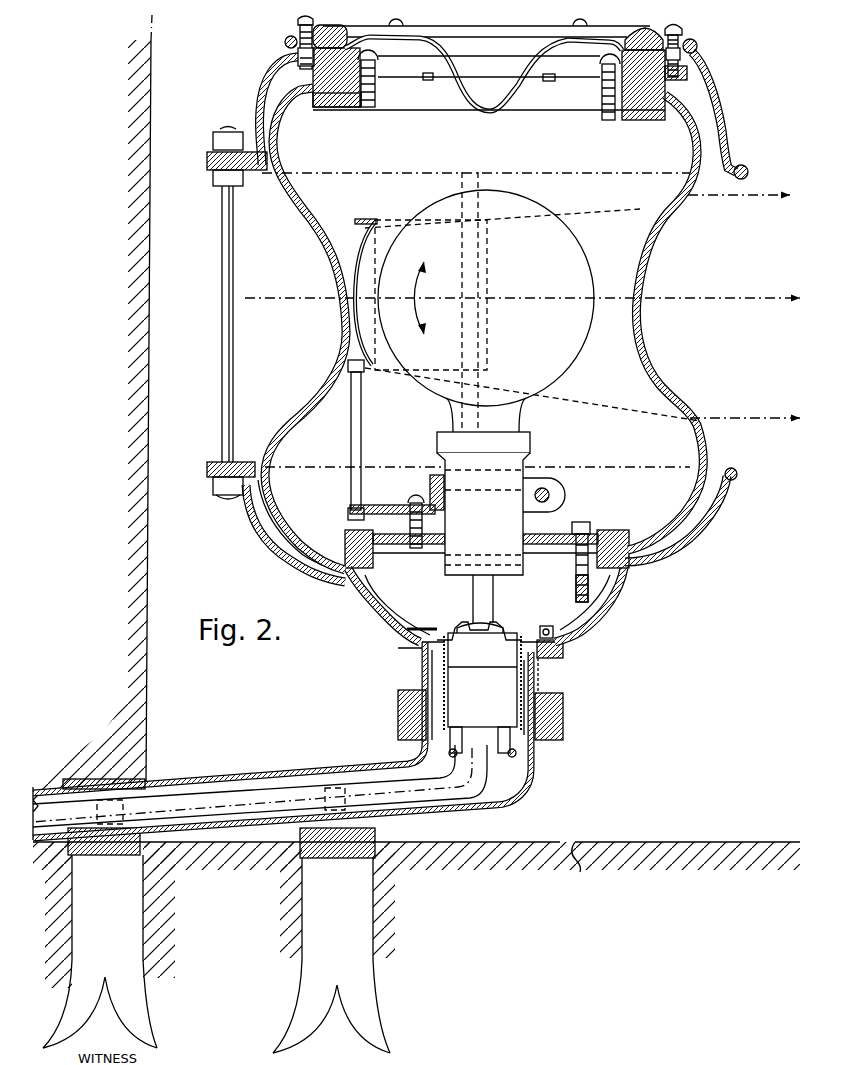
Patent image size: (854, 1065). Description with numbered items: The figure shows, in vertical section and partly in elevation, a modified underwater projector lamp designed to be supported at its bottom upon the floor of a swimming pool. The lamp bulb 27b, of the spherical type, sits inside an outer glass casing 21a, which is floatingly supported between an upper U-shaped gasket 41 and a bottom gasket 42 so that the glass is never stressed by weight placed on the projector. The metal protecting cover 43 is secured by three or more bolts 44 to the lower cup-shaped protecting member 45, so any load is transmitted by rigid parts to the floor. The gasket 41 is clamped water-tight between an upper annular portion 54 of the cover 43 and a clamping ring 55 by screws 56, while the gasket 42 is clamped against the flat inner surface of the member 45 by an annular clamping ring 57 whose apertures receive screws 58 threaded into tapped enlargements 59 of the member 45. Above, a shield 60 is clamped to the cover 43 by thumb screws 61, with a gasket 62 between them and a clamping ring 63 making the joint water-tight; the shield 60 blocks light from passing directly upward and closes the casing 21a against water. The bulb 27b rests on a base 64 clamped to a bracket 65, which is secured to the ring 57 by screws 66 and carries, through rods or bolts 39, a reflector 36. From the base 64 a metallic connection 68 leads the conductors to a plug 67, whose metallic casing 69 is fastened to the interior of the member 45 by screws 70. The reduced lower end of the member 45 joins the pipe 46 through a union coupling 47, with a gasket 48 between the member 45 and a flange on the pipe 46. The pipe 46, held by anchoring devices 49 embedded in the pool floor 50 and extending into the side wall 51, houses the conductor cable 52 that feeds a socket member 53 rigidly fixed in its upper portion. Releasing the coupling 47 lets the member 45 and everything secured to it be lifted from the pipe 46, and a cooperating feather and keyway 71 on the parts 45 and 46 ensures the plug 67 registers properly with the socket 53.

The outer glass casing 21a is at (648, 245).
The lamp bulb 27b is at (570, 220).
The reflector 36 is at (362, 250).
The rods or bolts 39 is at (350, 432).
The gasket 41 is at (315, 97).
The gasket 42 is at (620, 550).
The protecting cover 43 is at (716, 82).
The bolts 44 is at (232, 285).
The cup-shaped protecting member 45 is at (692, 548).
The pipe 46 is at (365, 745).
The union coupling 47 is at (397, 700).
The gasket 48 is at (566, 722).
The anchoring devices 49 is at (143, 938).
The floor 50 is at (582, 872).
The side wall 51 is at (150, 735).
The conductor cable 52 is at (250, 790).
The socket member 53 is at (482, 690).
The upper annular portion 54 is at (665, 75).
The clamping ring 55 is at (634, 118).
The screws 56 is at (606, 116).
The annular clamping ring 57 is at (590, 533).
The screws 58 is at (580, 522).
The enlargements 59 is at (573, 590).
The shield 60 is at (463, 92).
The thumb screws 61 is at (298, 22).
The gasket 62 is at (332, 58).
The clamping ring 63 is at (646, 34).
The base 64 is at (527, 440).
The bracket 65 is at (548, 487).
The screws 66 is at (417, 502).
The plug 67 is at (482, 654).
The metallic connection 68 is at (472, 592).
The metallic casing 69 is at (515, 625).
The screws 70 is at (553, 626).
The feather and keyway 71 is at (553, 672).